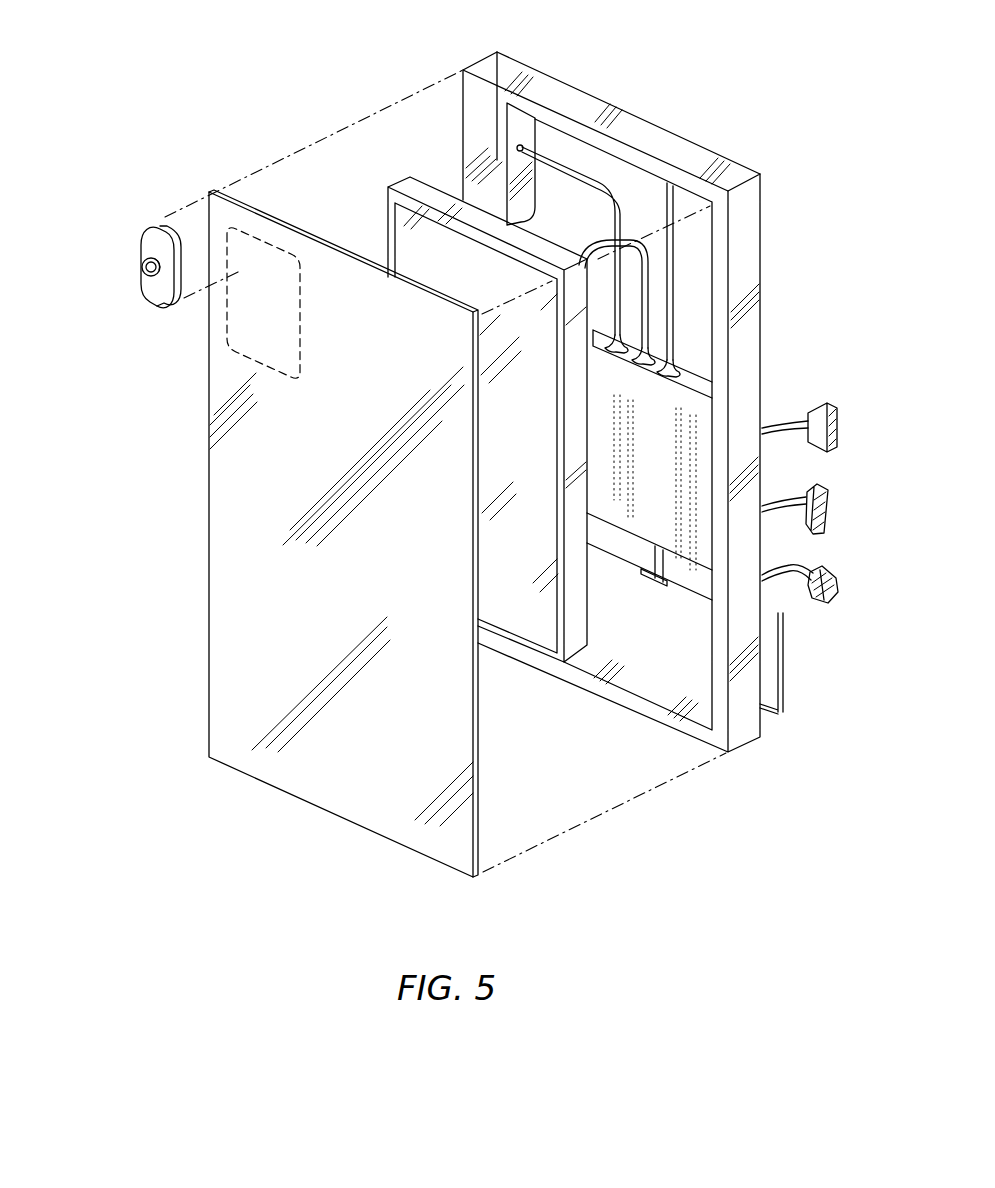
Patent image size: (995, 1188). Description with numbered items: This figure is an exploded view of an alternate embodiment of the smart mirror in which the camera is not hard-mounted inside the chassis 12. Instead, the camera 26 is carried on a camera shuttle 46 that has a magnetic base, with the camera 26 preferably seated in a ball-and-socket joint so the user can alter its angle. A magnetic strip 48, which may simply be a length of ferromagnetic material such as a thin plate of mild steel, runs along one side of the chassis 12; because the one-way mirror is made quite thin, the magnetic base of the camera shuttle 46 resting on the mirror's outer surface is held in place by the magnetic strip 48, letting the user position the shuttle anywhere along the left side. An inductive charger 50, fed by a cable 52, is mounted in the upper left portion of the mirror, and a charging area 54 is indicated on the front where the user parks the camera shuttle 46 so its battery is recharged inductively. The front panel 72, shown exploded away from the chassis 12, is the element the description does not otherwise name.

The chassis 12 is at (731, 180).
The camera 26 is at (143, 268).
The camera shuttle 46 is at (162, 221).
The magnetic strip 48 is at (463, 158).
The inductive charger 50 is at (520, 122).
The cable 52 is at (585, 173).
The charging area 54 is at (252, 353).
The door panel 72 is at (233, 680).